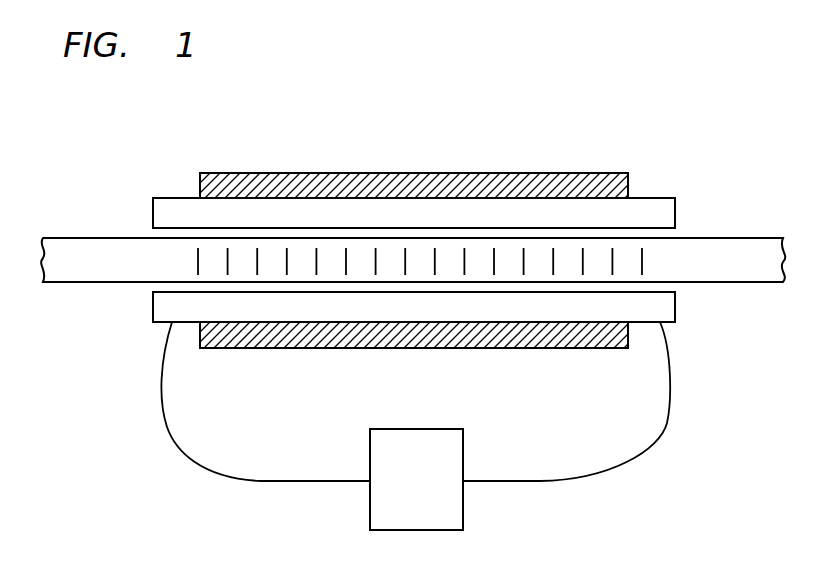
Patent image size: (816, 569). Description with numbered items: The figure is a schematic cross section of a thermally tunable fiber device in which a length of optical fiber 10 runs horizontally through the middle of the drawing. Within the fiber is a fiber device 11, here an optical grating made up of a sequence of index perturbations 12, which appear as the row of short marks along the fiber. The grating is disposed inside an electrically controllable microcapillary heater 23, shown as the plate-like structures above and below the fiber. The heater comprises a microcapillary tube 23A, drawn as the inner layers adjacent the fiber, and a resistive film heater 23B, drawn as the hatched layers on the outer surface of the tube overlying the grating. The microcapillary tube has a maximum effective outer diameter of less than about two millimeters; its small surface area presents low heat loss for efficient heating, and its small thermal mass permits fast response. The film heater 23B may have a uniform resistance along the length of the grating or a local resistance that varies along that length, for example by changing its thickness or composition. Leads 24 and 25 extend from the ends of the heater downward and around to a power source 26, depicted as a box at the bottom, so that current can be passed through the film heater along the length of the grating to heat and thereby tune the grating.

The optical fiber 10 is at (89, 238).
The fiber device 11 is at (172, 257).
The index perturbations 12 is at (258, 262).
The microcapillary heater 23 is at (447, 234).
The microcapillary tube 23A is at (676, 213).
The resistive film heater 23B is at (538, 172).
The lead 24 is at (163, 423).
The lead 25 is at (668, 423).
The power source 26 is at (465, 505).